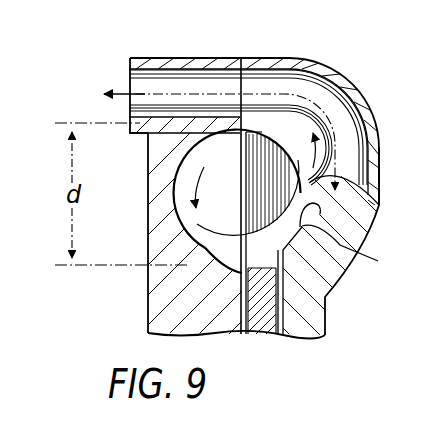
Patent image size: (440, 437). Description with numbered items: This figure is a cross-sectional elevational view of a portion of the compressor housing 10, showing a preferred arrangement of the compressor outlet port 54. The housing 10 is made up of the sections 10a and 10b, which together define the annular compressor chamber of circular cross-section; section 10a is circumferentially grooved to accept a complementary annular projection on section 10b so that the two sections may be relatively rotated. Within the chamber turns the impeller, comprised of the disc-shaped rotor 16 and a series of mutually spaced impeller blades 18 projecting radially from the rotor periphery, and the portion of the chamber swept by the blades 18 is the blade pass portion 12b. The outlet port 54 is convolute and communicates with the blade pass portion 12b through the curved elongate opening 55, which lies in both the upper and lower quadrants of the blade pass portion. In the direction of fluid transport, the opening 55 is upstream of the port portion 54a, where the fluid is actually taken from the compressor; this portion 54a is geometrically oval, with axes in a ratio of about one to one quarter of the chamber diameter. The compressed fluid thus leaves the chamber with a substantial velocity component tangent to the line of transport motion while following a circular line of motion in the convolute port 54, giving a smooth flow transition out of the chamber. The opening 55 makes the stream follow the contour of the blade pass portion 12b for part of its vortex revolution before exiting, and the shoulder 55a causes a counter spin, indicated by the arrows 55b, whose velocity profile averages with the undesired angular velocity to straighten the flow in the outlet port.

The housing 10 is at (220, 207).
The housing section 10a is at (158, 303).
The housing section 10b is at (317, 310).
The blade pass portion 12b is at (266, 140).
The rotor 16 is at (261, 338).
The impeller blades 18 is at (286, 201).
The outlet port 54 is at (326, 97).
The port portion 54a is at (138, 80).
The opening 55 is at (302, 209).
The shoulder 55a is at (361, 251).
The counter spin arrows 55b is at (362, 205).